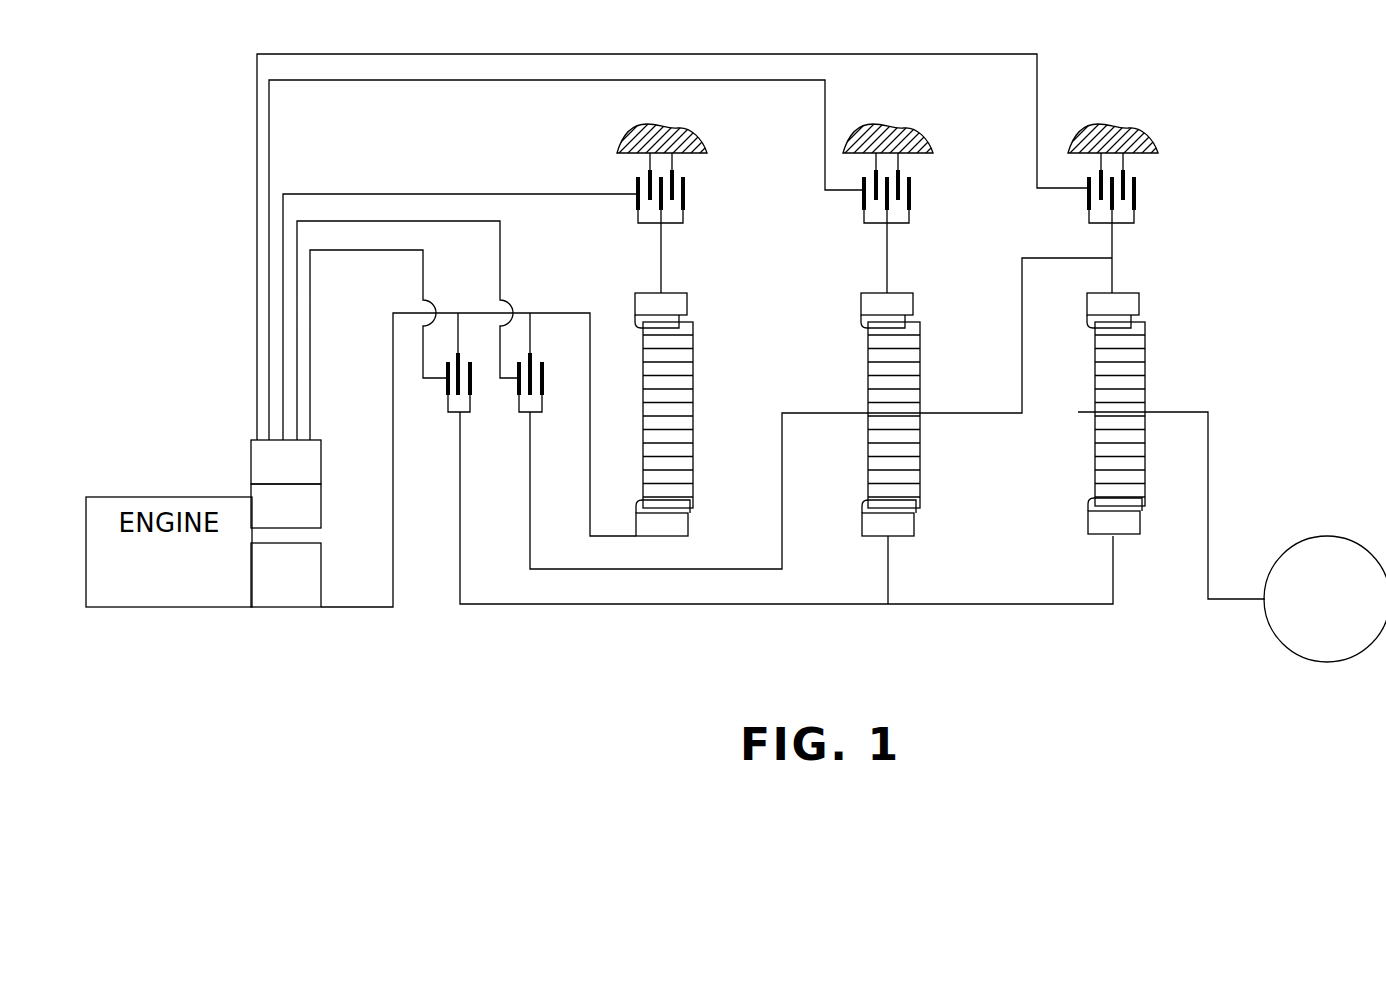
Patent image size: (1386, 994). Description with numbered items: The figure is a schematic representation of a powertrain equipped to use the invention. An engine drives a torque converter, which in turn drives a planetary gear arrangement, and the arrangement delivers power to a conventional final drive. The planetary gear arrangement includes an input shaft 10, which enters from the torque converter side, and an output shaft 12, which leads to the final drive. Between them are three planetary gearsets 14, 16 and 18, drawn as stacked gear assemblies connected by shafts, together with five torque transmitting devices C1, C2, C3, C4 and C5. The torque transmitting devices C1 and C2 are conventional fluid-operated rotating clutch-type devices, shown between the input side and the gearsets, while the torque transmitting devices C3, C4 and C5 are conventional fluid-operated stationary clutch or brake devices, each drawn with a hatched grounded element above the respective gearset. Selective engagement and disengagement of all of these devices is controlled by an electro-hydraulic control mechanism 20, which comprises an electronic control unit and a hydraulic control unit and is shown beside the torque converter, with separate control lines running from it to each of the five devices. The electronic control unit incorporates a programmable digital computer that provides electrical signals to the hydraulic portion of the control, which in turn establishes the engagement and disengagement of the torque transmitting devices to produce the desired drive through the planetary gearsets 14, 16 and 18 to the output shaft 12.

The input shaft 10 is at (363, 607).
The output shaft 12 is at (1240, 599).
The planetary gearset 14 is at (1145, 282).
The planetary gearset 16 is at (920, 282).
The planetary gearset 18 is at (694, 282).
The electro-hydraulic control mechanism 20 is at (205, 468).
The torque transmitting device C1 is at (443, 402).
The torque transmitting device C2 is at (515, 402).
The torque transmitting device C3 is at (708, 158).
The torque transmitting device C4 is at (934, 157).
The torque transmitting device C5 is at (1159, 157).